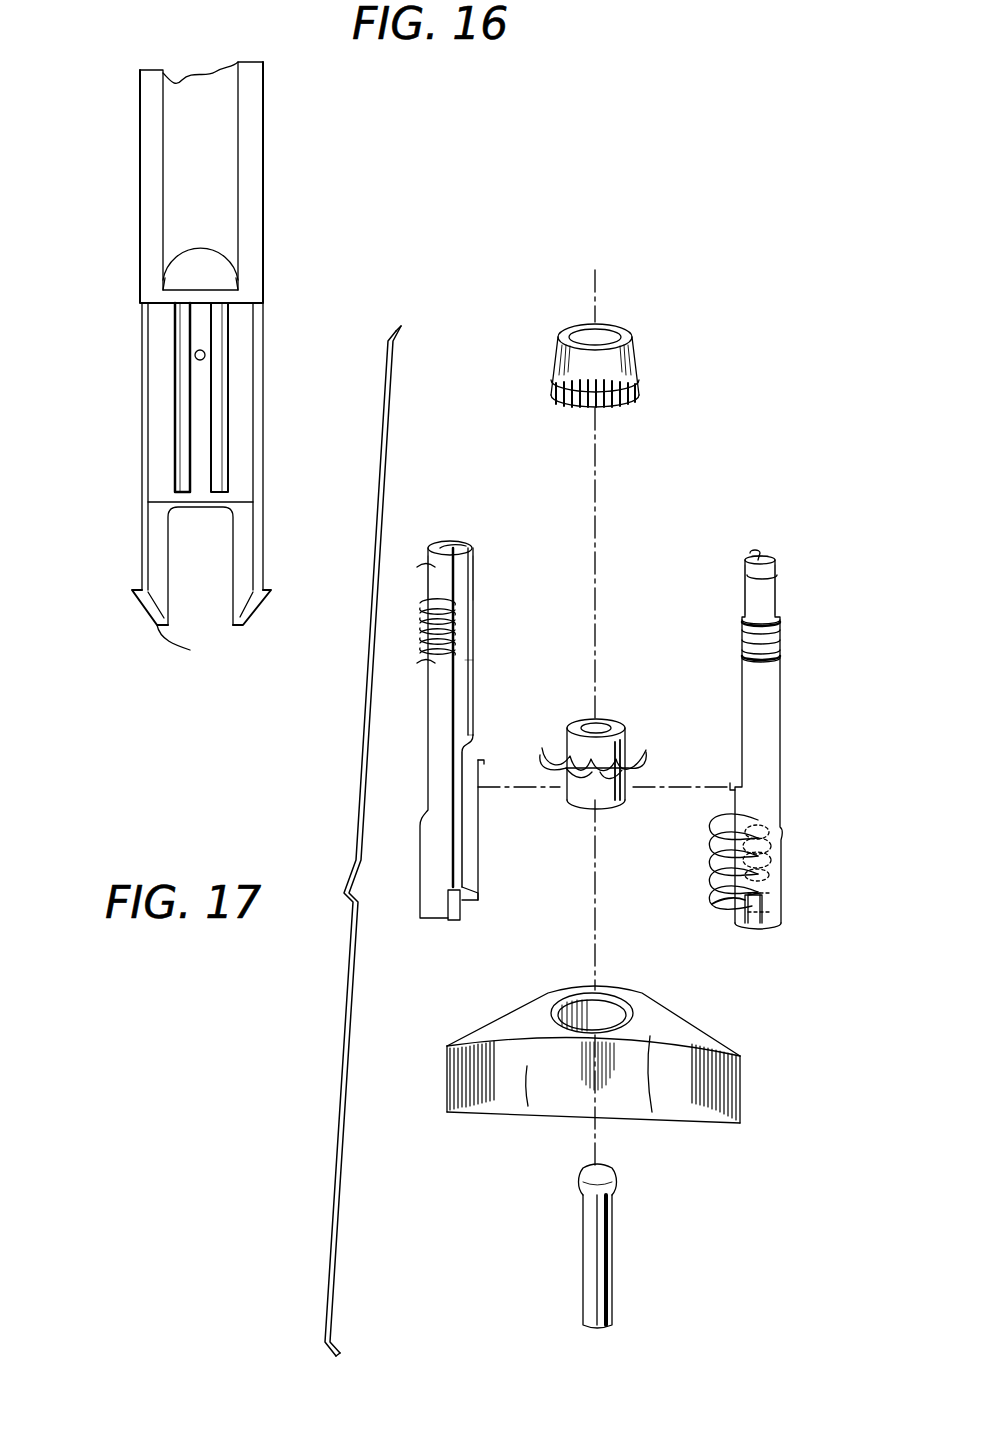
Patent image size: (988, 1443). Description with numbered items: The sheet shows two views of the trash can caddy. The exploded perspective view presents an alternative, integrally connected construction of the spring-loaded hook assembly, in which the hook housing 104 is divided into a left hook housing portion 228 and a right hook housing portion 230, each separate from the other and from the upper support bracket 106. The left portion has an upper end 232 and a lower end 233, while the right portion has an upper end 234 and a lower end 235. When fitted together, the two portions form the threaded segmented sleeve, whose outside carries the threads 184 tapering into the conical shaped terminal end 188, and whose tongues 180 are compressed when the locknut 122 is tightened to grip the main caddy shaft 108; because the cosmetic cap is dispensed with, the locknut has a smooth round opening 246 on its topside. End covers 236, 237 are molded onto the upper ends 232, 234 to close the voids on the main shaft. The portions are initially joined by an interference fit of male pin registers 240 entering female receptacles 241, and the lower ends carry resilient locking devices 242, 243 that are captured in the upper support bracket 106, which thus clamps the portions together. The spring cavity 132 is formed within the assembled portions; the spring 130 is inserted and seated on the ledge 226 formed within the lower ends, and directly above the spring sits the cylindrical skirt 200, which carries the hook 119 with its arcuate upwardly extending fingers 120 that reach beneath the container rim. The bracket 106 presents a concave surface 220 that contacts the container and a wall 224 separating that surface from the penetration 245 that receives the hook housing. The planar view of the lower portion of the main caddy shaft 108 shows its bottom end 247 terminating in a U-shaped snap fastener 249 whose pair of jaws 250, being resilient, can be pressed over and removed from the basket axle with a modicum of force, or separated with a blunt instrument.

In FIG. 16, the hook housing 104 is at (647, 711).
In FIG. 16, the upper support bracket 106 is at (620, 1044).
In FIG. 17, the main caddy shaft 108 is at (262, 214).
In FIG. 16, the main caddy shaft 108 is at (613, 1249).
In FIG. 16, the hook 119 is at (568, 790).
In FIG. 16, the upwardly extending fingers 120 is at (604, 748).
In FIG. 16, the locknut 122 is at (590, 342).
In FIG. 16, the spring 130 is at (715, 859).
In FIG. 16, the spring cavity 132 is at (781, 849).
In FIG. 16, the tongues 180 is at (471, 549).
In FIG. 16, the threads 184 is at (436, 610).
In FIG. 16, the conical shaped terminal end 188 is at (450, 571).
In FIG. 16, the cylindrical skirt 200 is at (622, 801).
In FIG. 16, the concave surface 220 is at (497, 1093).
In FIG. 16, the wall 224 is at (685, 1091).
In FIG. 16, the ledge 226 is at (479, 881).
In FIG. 16, the left hook housing portion 228 is at (473, 653).
In FIG. 16, the right hook housing portion 230 is at (741, 726).
In FIG. 16, the upper end of housing portion 228 232 is at (441, 543).
In FIG. 16, the lower end of housing portion 228 233 is at (468, 856).
In FIG. 16, the upper end of housing portion 230 234 is at (765, 556).
In FIG. 16, the lower end of housing portion 230 235 is at (752, 925).
In FIG. 16, the end cover 236 is at (462, 545).
In FIG. 16, the end cover 237 is at (750, 561).
In FIG. 16, the male pin registers 240 is at (484, 762).
In FIG. 16, the female receptacles 241 is at (470, 738).
In FIG. 16, the resilient locking device 242 is at (453, 921).
In FIG. 16, the resilient locking device 243 is at (720, 905).
In FIG. 16, the penetration 245 is at (608, 1006).
In FIG. 16, the smooth round opening 246 is at (625, 333).
In FIG. 17, the bottom end of main caddy shaft 247 is at (153, 401).
In FIG. 17, the U-shaped snap fastener 249 is at (153, 546).
In FIG. 17, the jaws 250 is at (190, 650).